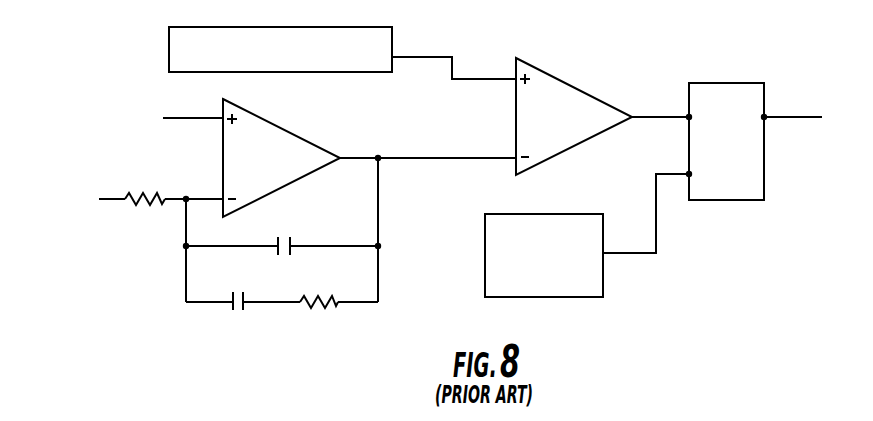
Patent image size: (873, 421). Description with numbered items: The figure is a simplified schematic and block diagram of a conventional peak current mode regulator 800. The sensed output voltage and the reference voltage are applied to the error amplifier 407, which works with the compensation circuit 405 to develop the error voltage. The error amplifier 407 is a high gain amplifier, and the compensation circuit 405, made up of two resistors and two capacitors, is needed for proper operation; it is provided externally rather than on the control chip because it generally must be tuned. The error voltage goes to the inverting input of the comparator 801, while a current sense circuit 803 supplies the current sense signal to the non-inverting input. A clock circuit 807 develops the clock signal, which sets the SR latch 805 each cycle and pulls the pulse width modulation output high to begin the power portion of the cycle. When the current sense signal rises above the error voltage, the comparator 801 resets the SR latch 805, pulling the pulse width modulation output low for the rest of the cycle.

The peak current mode regulator 800 is at (743, 266).
The current sense circuit 803 is at (296, 58).
The comparator 801 is at (565, 128).
The SR latch 805 is at (733, 83).
The clock circuit 807 is at (559, 279).
The error amplifier 407 is at (273, 171).
The compensation circuit 405 is at (163, 264).